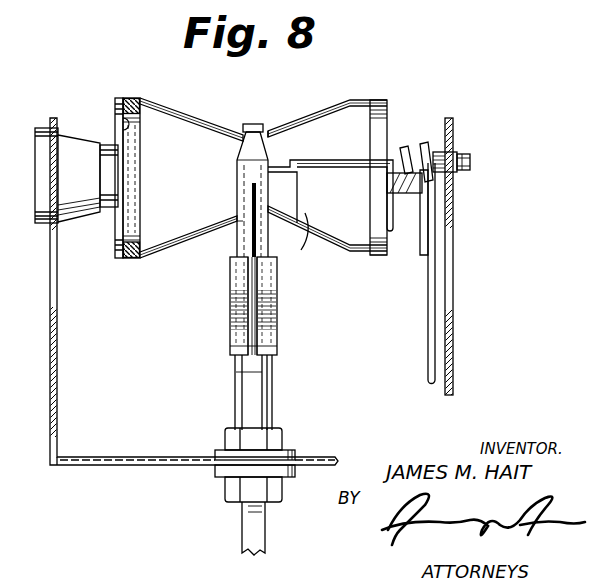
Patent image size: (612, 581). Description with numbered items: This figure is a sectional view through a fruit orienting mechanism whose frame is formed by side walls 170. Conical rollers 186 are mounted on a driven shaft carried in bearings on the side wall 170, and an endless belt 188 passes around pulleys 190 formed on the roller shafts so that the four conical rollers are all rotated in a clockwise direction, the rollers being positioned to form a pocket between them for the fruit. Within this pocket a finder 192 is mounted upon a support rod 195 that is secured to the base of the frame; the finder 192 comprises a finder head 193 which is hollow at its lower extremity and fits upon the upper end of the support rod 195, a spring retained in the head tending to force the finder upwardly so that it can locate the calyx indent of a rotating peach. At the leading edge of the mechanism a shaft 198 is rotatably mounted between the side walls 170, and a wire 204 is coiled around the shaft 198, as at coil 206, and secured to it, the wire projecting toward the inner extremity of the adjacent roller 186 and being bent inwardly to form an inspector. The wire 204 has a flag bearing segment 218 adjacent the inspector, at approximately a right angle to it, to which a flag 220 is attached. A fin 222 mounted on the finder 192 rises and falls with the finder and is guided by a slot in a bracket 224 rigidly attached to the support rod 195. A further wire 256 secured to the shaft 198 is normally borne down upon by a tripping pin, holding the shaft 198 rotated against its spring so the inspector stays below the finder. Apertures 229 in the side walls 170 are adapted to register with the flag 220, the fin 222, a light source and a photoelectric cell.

The side walls 170 is at (55, 118).
The conical rollers 186 is at (163, 106).
The endless belt 188 is at (132, 99).
The pulleys 190 is at (127, 123).
The finder 192 is at (270, 138).
The finder head 193 is at (251, 123).
The support rod 195 is at (270, 366).
The shaft 198 is at (470, 162).
The wire 204 is at (364, 155).
The coil 206 is at (406, 150).
The flag bearing segment 218 is at (298, 173).
The flag 220 is at (301, 249).
The fin 222 is at (241, 236).
The bracket 224 is at (280, 316).
The apertures 229 is at (50, 282).
The wire 256 is at (430, 311).